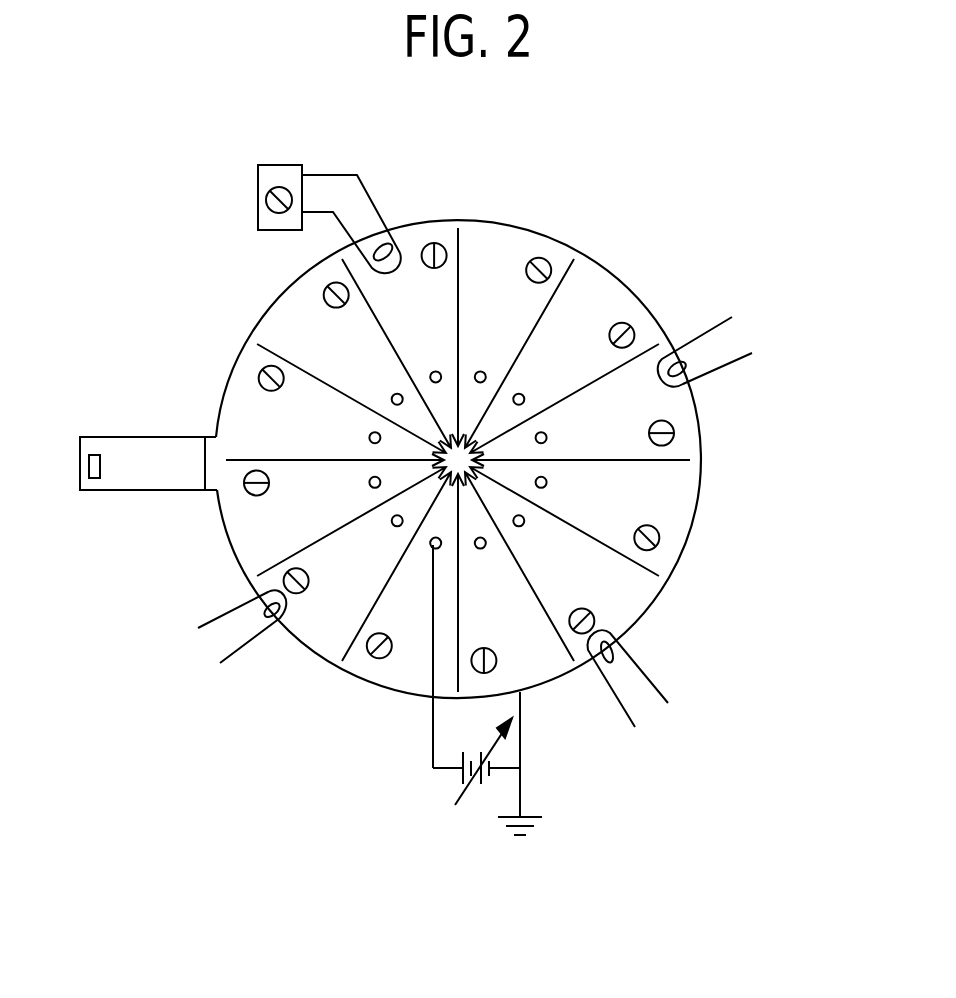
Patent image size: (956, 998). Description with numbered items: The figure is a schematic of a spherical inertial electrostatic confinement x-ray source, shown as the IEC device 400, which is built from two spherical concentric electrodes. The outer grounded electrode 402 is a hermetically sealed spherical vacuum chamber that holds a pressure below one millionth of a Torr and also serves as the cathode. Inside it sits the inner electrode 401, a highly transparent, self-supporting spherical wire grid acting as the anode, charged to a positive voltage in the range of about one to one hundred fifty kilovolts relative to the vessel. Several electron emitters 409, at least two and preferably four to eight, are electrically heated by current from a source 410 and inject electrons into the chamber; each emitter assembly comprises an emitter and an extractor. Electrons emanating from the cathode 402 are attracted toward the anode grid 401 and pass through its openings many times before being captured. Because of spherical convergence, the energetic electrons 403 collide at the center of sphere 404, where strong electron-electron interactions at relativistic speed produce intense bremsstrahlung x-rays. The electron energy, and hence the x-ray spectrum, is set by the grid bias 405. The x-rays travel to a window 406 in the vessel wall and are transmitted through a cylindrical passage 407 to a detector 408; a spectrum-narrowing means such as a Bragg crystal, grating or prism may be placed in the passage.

The spherical IEC device 400 is at (668, 839).
The inner electrode 401 is at (524, 395).
The outer grounded electrode 402 is at (700, 497).
The energetic electrons 403 is at (605, 620).
The center of sphere 404 is at (448, 473).
The grid bias 405 is at (455, 808).
The window 406 is at (205, 495).
The cylindrical passage 407 is at (90, 491).
The detector 408 is at (89, 462).
The electron emitters 409 is at (378, 199).
The source 410 is at (258, 204).